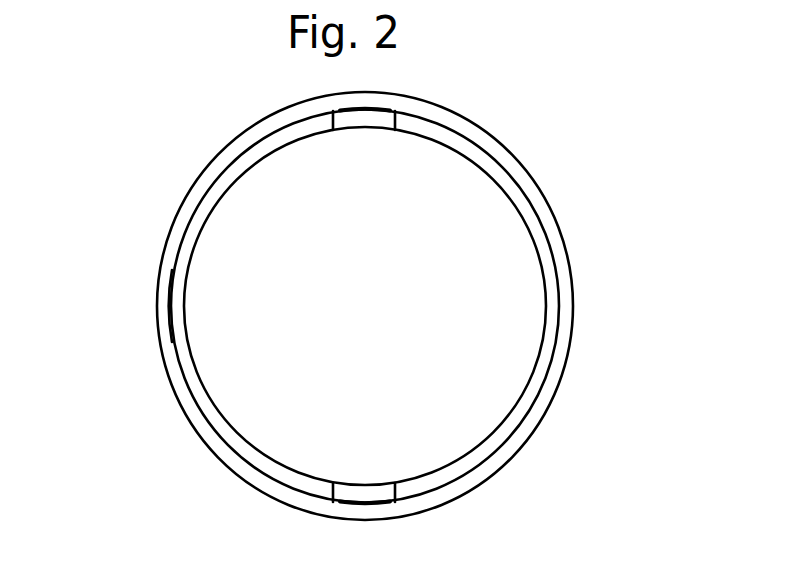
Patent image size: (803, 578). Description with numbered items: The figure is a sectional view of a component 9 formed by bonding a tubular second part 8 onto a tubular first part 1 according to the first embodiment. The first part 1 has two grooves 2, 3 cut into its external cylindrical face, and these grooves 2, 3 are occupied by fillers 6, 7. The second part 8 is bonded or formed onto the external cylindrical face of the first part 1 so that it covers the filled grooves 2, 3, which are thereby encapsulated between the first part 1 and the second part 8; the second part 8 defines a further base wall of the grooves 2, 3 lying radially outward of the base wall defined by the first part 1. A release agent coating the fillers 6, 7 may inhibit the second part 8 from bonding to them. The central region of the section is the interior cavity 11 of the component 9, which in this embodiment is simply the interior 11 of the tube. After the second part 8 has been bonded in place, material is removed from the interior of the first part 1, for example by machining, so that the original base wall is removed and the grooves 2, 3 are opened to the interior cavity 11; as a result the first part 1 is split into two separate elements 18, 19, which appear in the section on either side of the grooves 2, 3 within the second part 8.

The first part 1 is at (542, 205).
The groove 2 is at (337, 128).
The groove 3 is at (344, 488).
The filler 6 is at (380, 126).
The filler 7 is at (387, 496).
The second part 8 is at (493, 144).
The component 9 is at (607, 266).
The interior cavity 11 is at (376, 323).
The separate element 18 is at (553, 302).
The separate element 19 is at (177, 300).